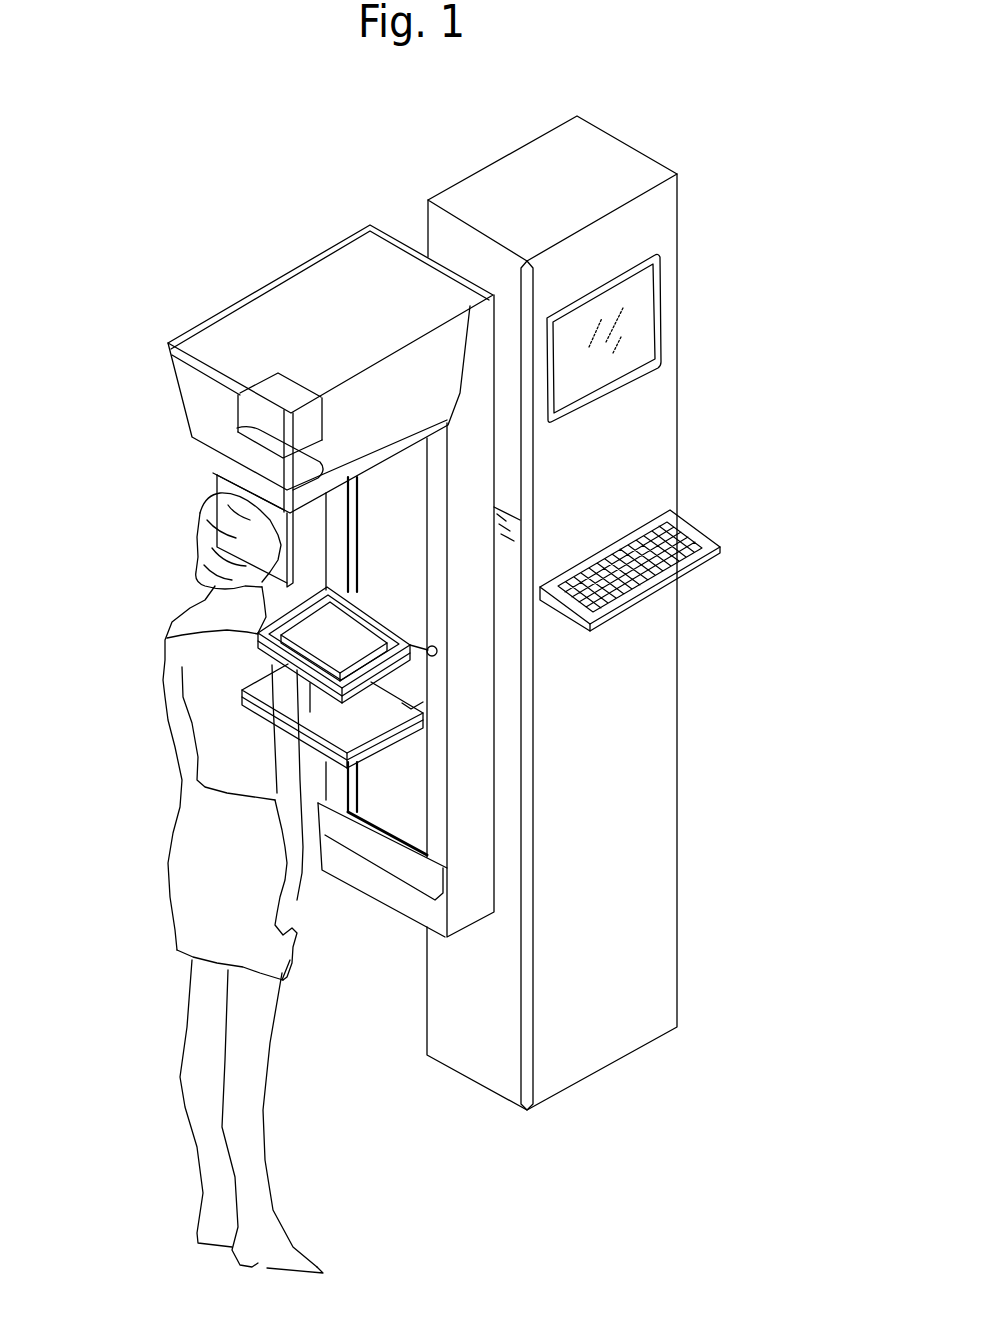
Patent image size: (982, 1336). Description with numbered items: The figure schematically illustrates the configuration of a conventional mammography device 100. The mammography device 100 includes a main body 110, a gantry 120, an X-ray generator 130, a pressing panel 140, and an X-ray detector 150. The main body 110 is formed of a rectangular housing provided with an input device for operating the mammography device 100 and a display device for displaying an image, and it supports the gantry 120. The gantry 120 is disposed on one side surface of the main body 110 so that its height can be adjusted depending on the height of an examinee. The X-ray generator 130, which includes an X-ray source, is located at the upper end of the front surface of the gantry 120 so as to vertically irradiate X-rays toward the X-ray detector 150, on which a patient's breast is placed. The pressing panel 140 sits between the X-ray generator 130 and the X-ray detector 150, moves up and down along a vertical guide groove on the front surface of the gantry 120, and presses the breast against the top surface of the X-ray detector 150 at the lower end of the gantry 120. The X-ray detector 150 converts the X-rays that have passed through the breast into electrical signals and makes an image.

The mammography device 100 is at (207, 147).
The main body 110 is at (677, 222).
The gantry 120 is at (473, 490).
The X-ray generator 130 is at (200, 389).
The pressing panel 140 is at (165, 656).
The X-ray detector 150 is at (350, 753).